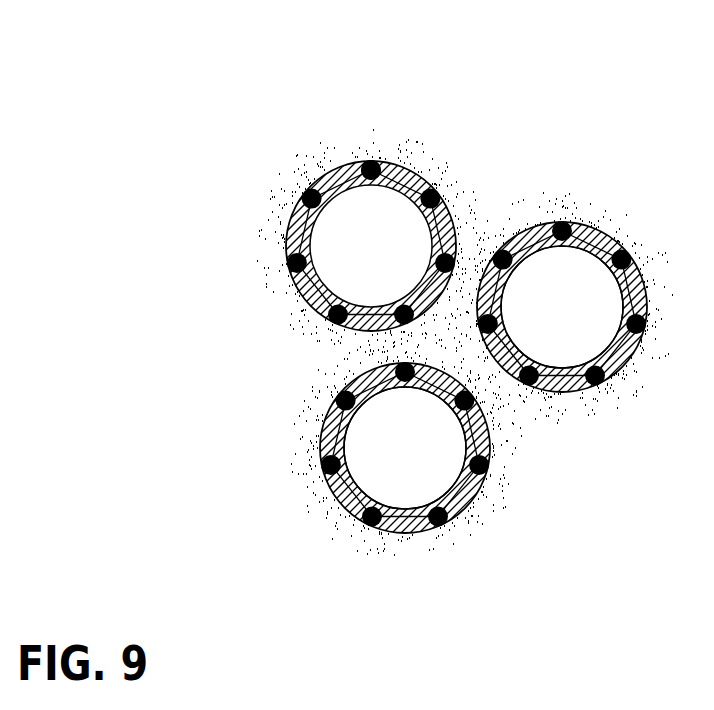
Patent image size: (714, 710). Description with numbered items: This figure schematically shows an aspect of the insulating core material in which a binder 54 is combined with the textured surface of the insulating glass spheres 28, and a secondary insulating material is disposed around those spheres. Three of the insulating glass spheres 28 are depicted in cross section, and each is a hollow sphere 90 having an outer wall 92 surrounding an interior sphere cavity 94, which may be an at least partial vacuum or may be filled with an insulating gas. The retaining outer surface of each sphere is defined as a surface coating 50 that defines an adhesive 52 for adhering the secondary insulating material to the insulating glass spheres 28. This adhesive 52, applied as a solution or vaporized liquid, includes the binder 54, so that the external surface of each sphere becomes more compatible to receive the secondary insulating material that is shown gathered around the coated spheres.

The insulating glass spheres 28 is at (262, 292).
The surface coating 50 is at (645, 237).
The adhesive 52 is at (553, 208).
The binder 54 is at (373, 163).
The hollow spheres 90 is at (554, 405).
The outer wall 92 is at (463, 497).
The interior sphere cavity 94 is at (407, 457).